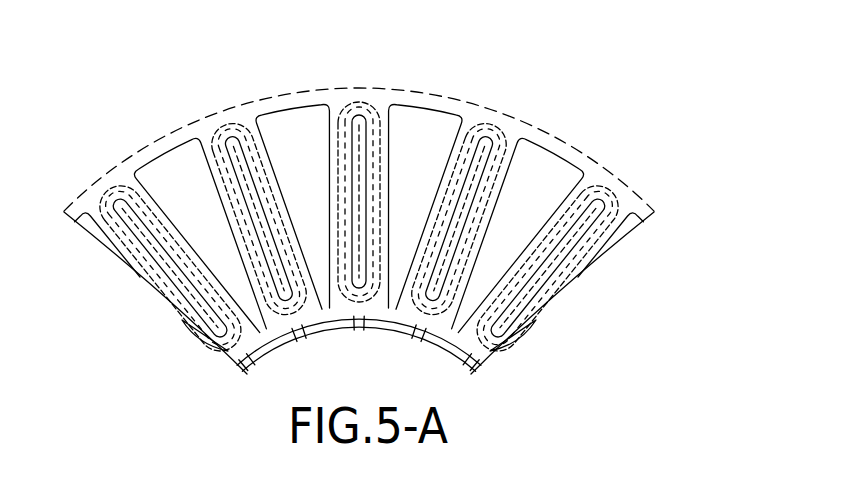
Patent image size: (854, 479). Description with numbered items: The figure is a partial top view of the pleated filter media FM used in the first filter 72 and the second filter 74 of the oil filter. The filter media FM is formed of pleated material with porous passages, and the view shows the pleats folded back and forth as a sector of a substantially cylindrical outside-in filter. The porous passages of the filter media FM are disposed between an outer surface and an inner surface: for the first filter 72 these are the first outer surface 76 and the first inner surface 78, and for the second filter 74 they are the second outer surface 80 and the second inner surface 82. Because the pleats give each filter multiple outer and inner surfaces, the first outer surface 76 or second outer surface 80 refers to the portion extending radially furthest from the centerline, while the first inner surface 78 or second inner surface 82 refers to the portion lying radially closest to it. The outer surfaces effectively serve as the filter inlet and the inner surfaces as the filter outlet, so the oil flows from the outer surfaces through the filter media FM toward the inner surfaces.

The first filter 72 is at (369, 121).
The second filter 74 is at (547, 100).
The first outer surface 76 is at (359, 215).
The second outer surface 80 is at (199, 121).
The first inner surface 78 is at (359, 346).
The second inner surface 82 is at (312, 323).
The filter media FM is at (364, 104).